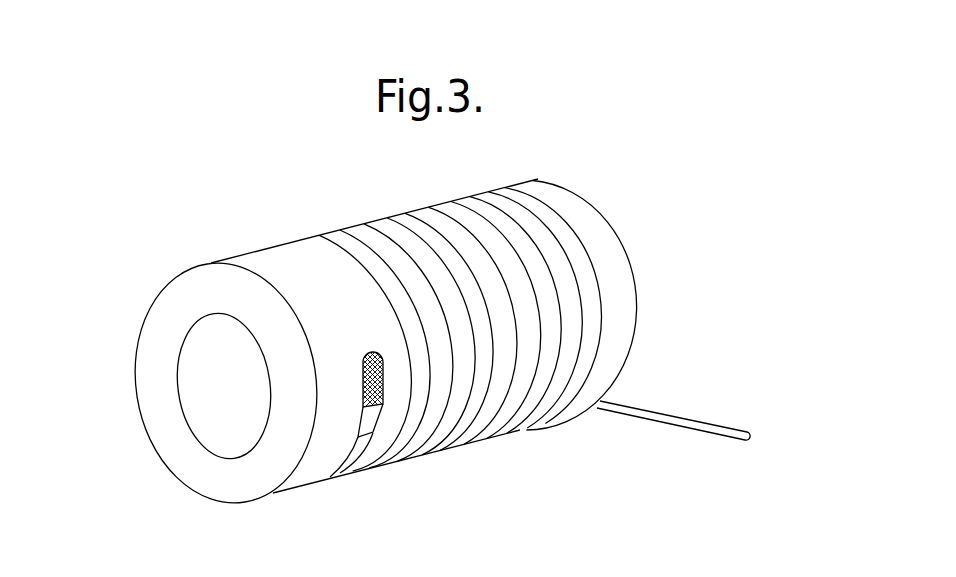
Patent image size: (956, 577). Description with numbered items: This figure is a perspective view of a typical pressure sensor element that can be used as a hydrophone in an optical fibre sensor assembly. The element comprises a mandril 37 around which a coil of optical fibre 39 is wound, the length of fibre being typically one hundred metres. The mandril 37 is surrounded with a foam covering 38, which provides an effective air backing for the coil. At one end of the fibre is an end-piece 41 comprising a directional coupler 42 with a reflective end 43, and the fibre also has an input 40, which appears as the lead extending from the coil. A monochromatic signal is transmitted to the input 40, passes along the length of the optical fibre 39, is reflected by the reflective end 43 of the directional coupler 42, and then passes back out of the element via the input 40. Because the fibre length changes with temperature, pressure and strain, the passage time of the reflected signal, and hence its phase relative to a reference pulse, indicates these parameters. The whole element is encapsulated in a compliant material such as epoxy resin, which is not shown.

The mandril 37 is at (205, 426).
The foam covering 38 is at (172, 296).
The coil of optical fibre 39 is at (452, 200).
The input 40 is at (748, 436).
The end-piece 41 is at (360, 341).
The directional coupler 42 is at (349, 423).
The reflective end 43 is at (365, 387).